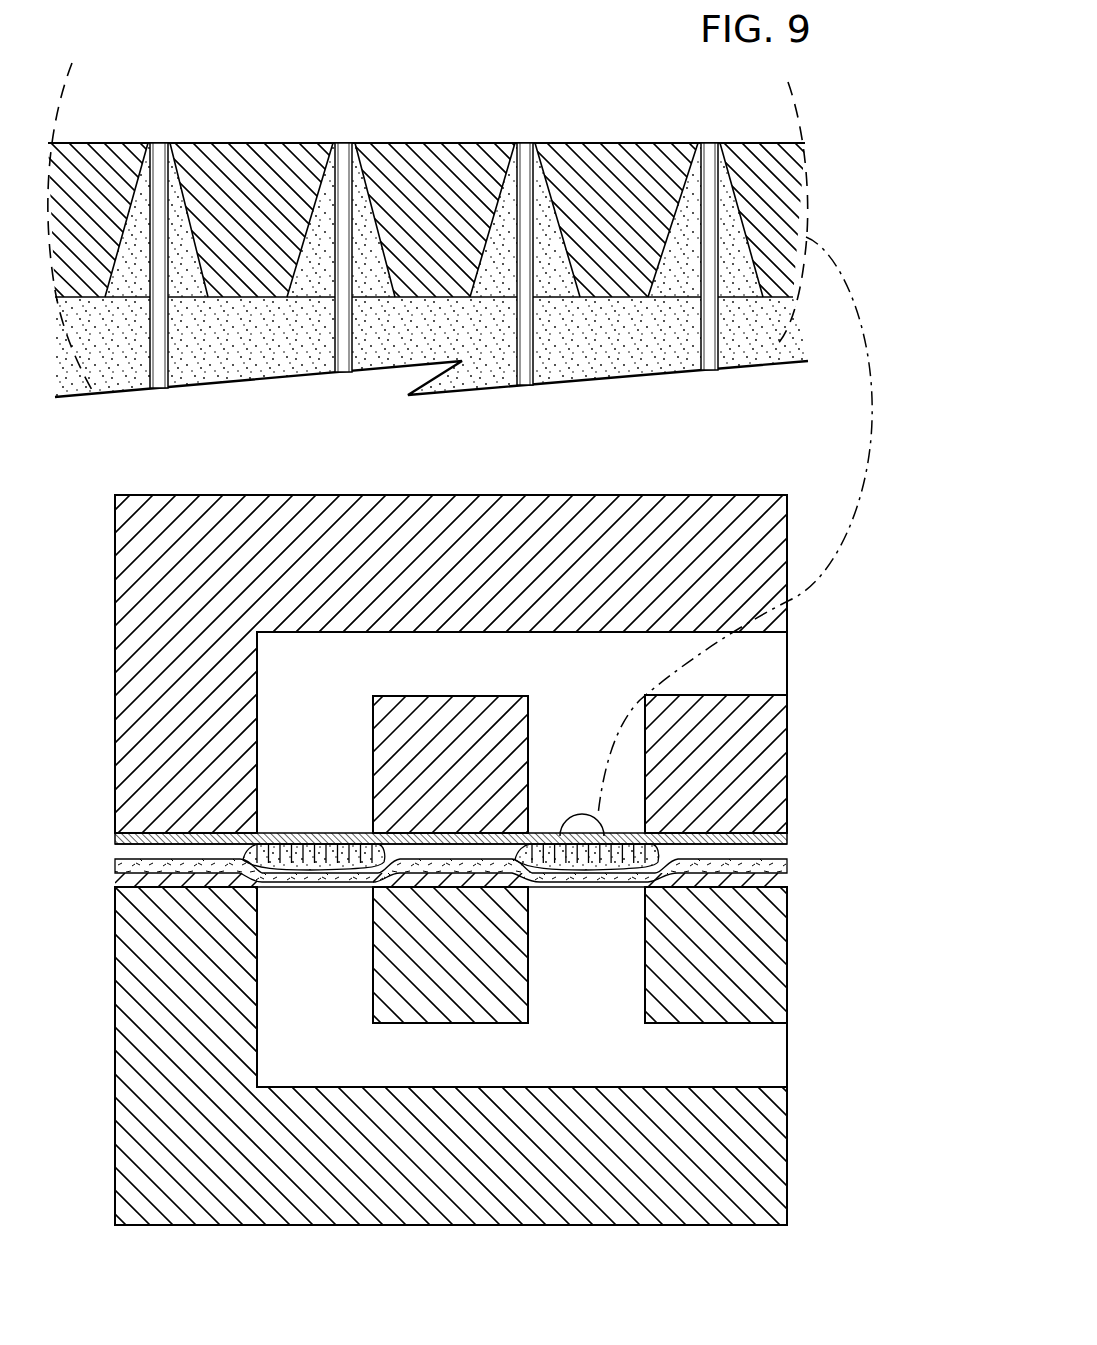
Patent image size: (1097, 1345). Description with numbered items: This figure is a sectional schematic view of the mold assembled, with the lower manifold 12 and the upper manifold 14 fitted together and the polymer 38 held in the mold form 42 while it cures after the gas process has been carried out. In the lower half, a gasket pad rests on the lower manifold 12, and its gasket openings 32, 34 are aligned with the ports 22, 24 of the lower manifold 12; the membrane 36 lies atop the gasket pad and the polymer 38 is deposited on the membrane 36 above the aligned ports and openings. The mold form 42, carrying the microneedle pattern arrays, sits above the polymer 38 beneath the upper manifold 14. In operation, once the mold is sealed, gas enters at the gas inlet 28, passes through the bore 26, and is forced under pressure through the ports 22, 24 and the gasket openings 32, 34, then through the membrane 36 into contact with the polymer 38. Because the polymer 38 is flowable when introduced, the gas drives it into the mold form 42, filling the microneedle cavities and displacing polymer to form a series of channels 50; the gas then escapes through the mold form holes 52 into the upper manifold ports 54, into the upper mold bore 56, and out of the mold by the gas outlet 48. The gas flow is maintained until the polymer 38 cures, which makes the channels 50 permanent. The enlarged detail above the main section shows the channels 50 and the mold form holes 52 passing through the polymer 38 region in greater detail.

The lower manifold 12 is at (115, 1175).
The upper manifold 14 is at (115, 591).
The port 22 is at (300, 980).
The port 24 is at (643, 970).
The bore 26 is at (530, 1058).
The gas inlet 28 is at (787, 1055).
The gasket opening 32 is at (257, 897).
The gasket opening 34 is at (720, 968).
The membrane 36 is at (787, 862).
The polymer 38 is at (742, 353).
The mold form 42 is at (787, 835).
The gas outlet 48 is at (787, 668).
The channel 50 is at (160, 393).
The mold form hole 52 is at (160, 147).
The upper manifold port 54 is at (570, 723).
The upper mold bore 56 is at (643, 648).